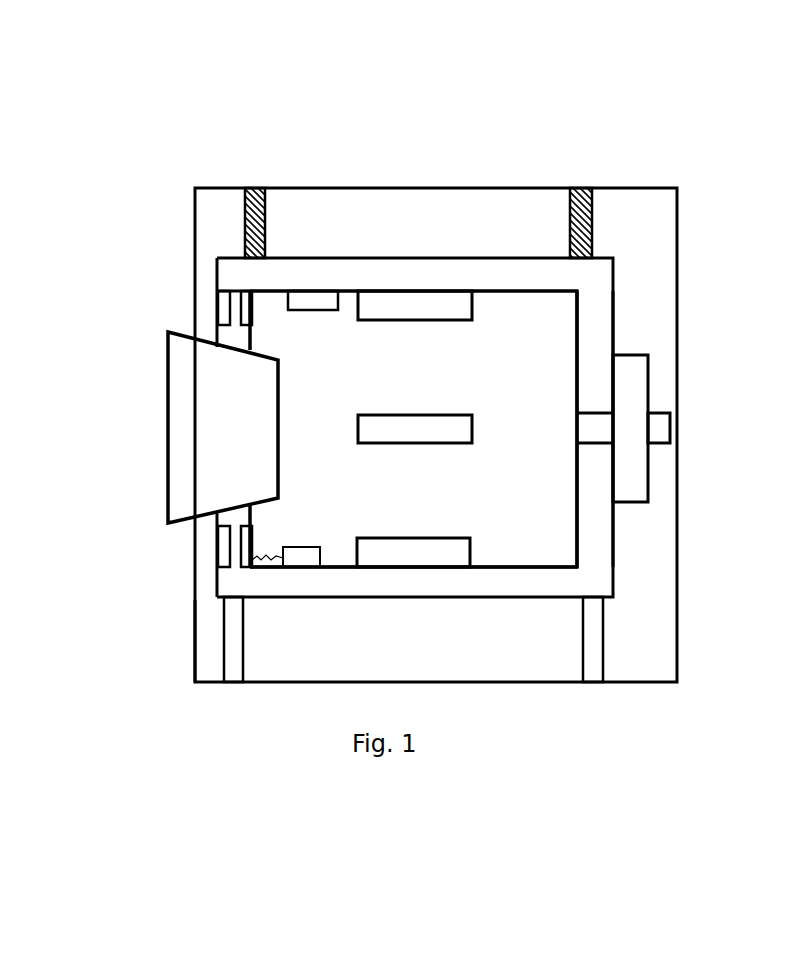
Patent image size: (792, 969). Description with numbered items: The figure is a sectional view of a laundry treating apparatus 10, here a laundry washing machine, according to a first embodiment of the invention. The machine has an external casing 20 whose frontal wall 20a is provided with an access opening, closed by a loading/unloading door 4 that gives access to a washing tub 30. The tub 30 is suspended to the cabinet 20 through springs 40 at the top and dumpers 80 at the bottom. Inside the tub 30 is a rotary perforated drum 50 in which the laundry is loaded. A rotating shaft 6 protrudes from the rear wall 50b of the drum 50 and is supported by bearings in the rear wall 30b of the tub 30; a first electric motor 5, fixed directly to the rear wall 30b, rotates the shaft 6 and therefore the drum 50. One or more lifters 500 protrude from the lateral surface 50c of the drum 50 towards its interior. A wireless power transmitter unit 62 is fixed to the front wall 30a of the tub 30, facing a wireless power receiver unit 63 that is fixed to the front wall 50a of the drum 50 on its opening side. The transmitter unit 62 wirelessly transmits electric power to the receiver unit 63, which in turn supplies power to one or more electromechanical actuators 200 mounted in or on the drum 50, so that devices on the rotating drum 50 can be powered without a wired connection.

The laundry treating apparatus 10 is at (574, 136).
The external casing 20 is at (678, 222).
The frontal wall 20a is at (195, 648).
The washing tub 30 is at (452, 258).
The front wall of the tub 30a is at (216, 273).
The rear wall of the tub 30b is at (615, 333).
The springs 40 is at (268, 205).
The rotary perforated drum 50 is at (578, 330).
The front wall of the drum 50a is at (255, 332).
The rear wall of the drum 50b is at (578, 540).
The lateral surface of the drum 50c is at (500, 566).
The lifters 500 is at (472, 310).
The electromechanical actuators 200 is at (302, 555).
The wireless power transmitter unit 62 is at (220, 308).
The wireless power receiver unit 63 is at (255, 315).
The loading/unloading door 4 is at (182, 443).
The first electric motor 5 is at (630, 378).
The rotating shaft 6 is at (671, 429).
The dumpers 80 is at (233, 653).